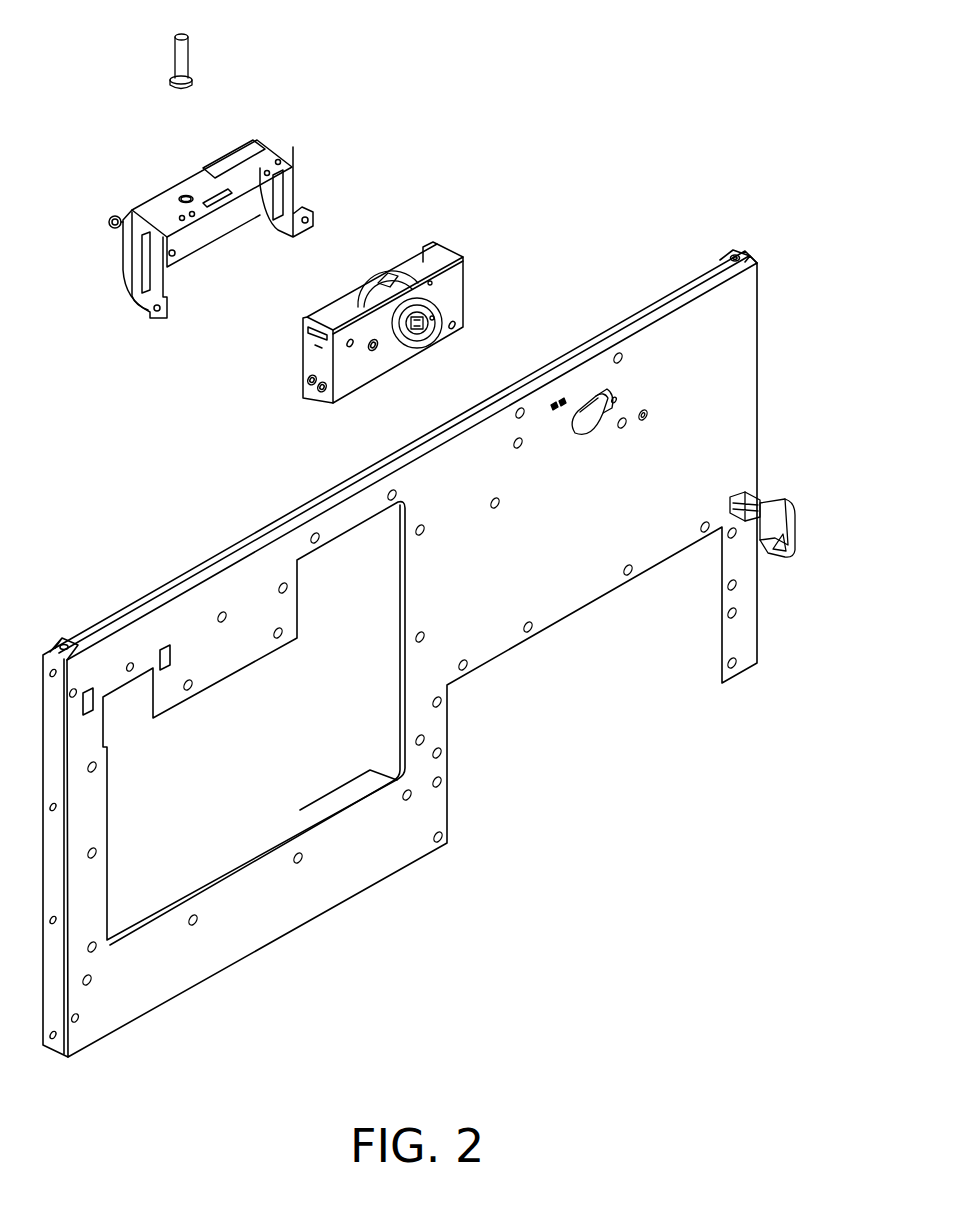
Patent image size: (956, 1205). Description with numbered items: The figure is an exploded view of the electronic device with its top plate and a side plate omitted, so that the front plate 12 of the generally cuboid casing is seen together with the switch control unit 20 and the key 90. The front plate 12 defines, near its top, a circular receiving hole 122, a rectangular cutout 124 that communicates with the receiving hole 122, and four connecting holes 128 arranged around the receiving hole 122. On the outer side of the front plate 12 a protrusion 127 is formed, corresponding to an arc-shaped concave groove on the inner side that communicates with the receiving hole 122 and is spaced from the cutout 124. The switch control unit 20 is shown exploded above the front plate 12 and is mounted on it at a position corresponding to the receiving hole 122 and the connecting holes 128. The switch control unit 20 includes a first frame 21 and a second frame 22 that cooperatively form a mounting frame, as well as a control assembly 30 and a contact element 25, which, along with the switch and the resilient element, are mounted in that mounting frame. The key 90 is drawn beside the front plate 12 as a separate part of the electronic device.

The front plate 12 is at (718, 410).
The switch control unit 20 is at (336, 26).
The first frame 21 is at (453, 282).
The second frame 22 is at (290, 183).
The contact element 25 is at (188, 57).
The control assembly 30 is at (380, 292).
The key 90 is at (773, 527).
The receiving hole 122 is at (572, 420).
The cutout 124 is at (585, 397).
The protrusion 127 is at (610, 400).
The connecting holes 128 is at (643, 413).